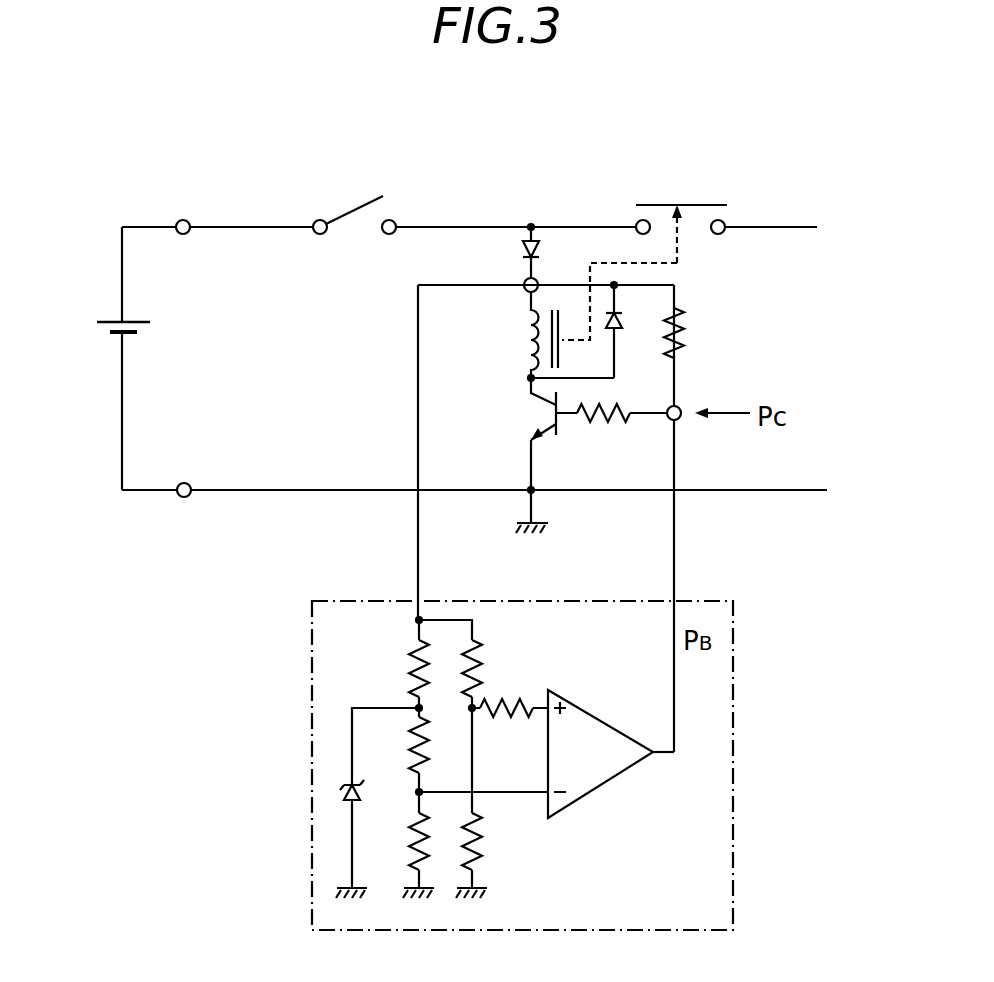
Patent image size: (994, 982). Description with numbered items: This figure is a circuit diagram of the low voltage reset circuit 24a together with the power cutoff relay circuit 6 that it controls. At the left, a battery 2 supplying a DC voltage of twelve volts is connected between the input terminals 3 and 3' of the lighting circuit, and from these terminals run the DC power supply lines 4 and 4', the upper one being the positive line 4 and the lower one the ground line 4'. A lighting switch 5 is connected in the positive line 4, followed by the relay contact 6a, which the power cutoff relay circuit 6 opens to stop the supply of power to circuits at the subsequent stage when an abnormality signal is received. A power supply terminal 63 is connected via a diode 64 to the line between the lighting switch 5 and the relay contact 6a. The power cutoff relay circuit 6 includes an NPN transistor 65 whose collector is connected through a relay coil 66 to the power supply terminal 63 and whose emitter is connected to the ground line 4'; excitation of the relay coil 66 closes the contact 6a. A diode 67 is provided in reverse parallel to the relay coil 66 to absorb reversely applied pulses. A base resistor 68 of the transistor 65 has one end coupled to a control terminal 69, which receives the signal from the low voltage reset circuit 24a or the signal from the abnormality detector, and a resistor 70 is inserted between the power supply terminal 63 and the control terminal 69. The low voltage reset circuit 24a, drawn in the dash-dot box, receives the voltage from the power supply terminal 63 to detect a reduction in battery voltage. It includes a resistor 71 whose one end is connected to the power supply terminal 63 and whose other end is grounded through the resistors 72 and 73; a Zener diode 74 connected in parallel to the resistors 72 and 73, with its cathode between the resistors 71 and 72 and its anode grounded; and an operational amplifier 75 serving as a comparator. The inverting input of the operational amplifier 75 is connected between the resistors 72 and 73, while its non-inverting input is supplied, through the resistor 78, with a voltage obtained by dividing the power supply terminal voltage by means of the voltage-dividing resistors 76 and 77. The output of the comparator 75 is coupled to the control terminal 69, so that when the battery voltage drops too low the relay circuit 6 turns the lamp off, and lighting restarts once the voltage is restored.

The battery 2 is at (110, 320).
The input terminal 3 is at (185, 192).
The DC power supply line 4 is at (251, 188).
The lighting switch 5 is at (358, 208).
The input terminal 3' is at (189, 523).
The DC power supply line 4' is at (304, 526).
The power cutoff relay circuit 6 is at (745, 306).
The relay contact 6a is at (686, 204).
The power supply terminal 63 is at (524, 280).
The diode 64 is at (540, 252).
The NPN transistor 65 is at (530, 410).
The relay coil 66 is at (526, 332).
The diode 67 is at (622, 320).
The base resistor 68 is at (612, 422).
The control terminal 69 is at (681, 406).
The resistor 70 is at (685, 336).
The low voltage reset circuit 24a is at (736, 735).
The resistor 71 is at (410, 656).
The resistor 72 is at (412, 753).
The resistor 73 is at (412, 846).
The Zener diode 74 is at (347, 783).
The operational amplifier 75 is at (598, 715).
The voltage-dividing resistor 76 is at (481, 668).
The voltage-dividing resistor 77 is at (481, 843).
The resistor 78 is at (500, 712).